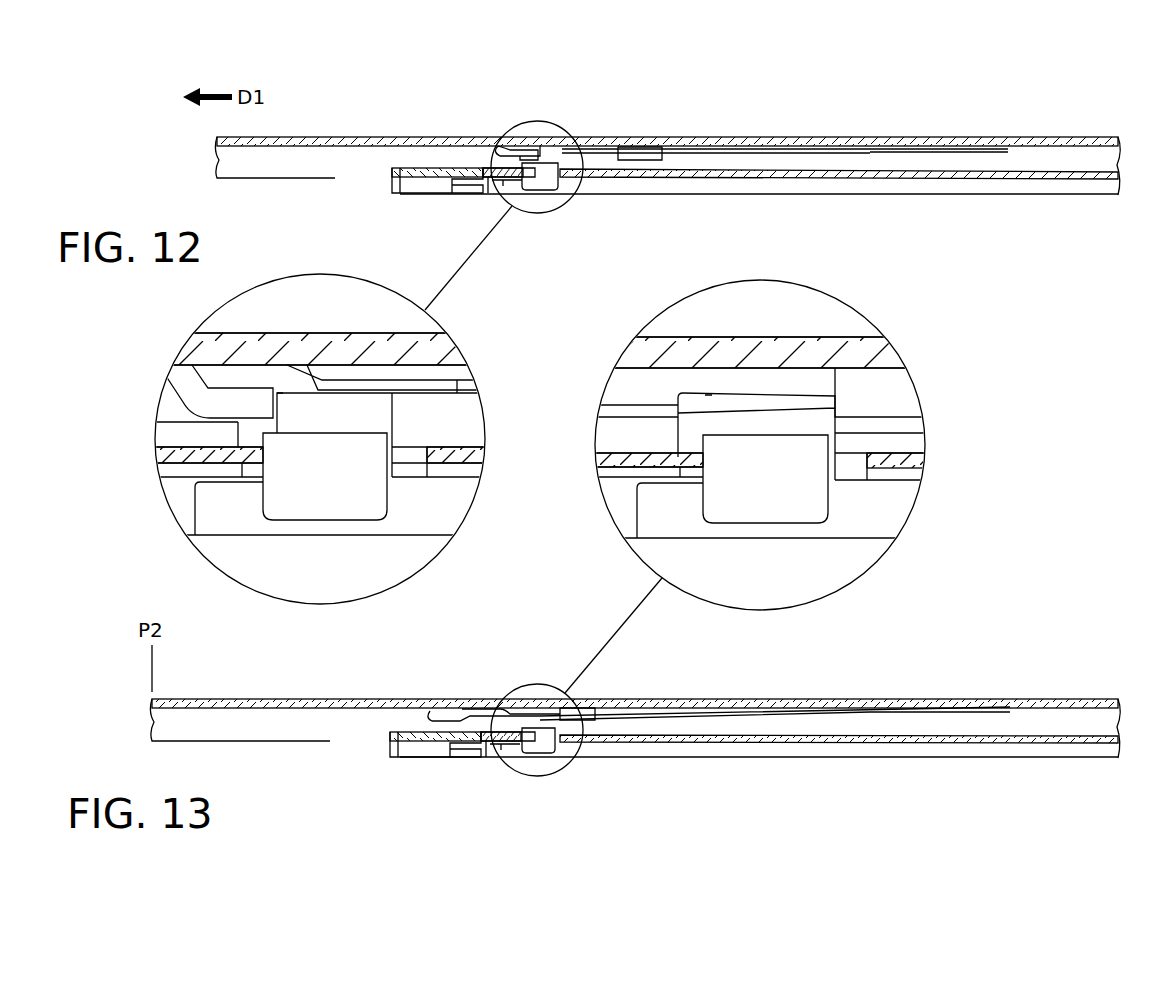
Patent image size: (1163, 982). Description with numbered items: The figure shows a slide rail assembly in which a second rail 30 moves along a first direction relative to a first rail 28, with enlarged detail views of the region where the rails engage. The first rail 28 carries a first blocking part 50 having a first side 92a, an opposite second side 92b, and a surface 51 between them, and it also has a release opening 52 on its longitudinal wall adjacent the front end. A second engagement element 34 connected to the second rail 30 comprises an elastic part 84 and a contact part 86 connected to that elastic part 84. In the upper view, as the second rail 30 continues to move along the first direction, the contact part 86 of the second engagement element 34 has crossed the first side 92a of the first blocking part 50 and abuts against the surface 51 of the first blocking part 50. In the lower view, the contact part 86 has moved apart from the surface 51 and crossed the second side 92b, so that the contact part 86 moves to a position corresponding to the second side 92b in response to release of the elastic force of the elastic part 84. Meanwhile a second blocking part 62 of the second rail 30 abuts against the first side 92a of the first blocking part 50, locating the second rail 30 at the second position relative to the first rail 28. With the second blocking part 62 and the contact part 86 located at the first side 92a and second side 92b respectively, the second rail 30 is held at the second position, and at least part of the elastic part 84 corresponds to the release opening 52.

In FIG. 12, the first rail 28 is at (996, 180).
In FIG. 13, the first rail 28 is at (1002, 744).
In FIG. 12, the second rail 30 is at (1057, 134).
In FIG. 13, the second rail 30 is at (1068, 697).
In FIG. 12, the second engagement element 34 is at (842, 152).
In FIG. 13, the second engagement element 34 is at (772, 718).
In FIG. 12, the first blocking part 50 is at (383, 425).
In FIG. 13, the first blocking part 50 is at (752, 423).
In FIG. 12, the surface of the first blocking part 51 is at (283, 390).
In FIG. 13, the surface of the first blocking part 51 is at (708, 395).
In FIG. 13, the release opening 52 is at (830, 460).
In FIG. 13, the second blocking part 62 is at (898, 393).
In FIG. 13, the elastic part 84 is at (755, 407).
In FIG. 12, the contact part 86 is at (388, 387).
In FIG. 13, the contact part 86 is at (633, 408).
In FIG. 12, the first side 92a is at (395, 395).
In FIG. 13, the first side 92a is at (835, 433).
In FIG. 12, the second side 92b is at (240, 432).
In FIG. 13, the second side 92b is at (677, 437).